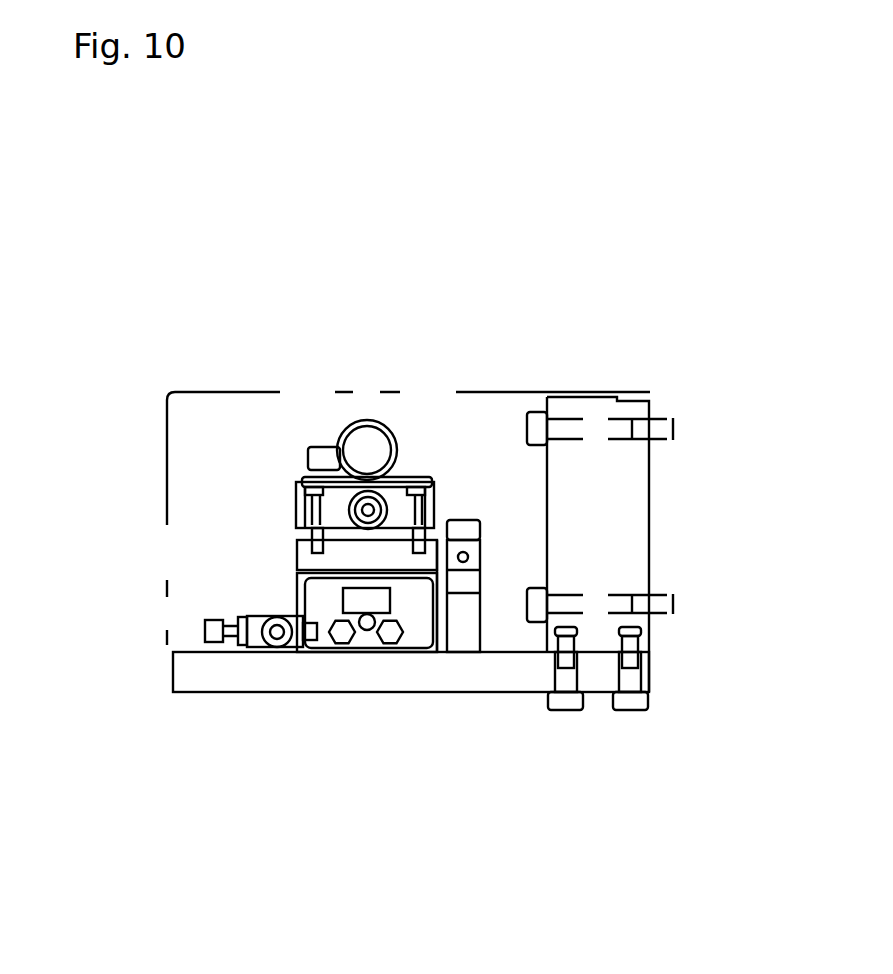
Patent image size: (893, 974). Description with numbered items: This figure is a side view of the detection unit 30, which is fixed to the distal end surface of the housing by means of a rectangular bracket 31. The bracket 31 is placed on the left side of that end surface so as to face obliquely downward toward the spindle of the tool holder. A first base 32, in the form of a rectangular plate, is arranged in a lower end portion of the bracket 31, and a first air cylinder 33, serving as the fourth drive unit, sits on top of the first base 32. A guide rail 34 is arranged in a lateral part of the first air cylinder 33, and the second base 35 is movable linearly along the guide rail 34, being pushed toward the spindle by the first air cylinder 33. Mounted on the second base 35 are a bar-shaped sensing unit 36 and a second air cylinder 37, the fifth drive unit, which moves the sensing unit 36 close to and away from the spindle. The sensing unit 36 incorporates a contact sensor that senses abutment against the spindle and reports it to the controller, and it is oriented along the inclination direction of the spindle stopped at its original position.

The detection unit 30 is at (362, 345).
The bracket 31 is at (617, 507).
The first base 32 is at (346, 678).
The first air cylinder 33 is at (322, 605).
The guide rail 34 is at (465, 613).
The second base 35 is at (303, 558).
The sensing unit 36 is at (350, 503).
The second air cylinder 37 is at (378, 450).